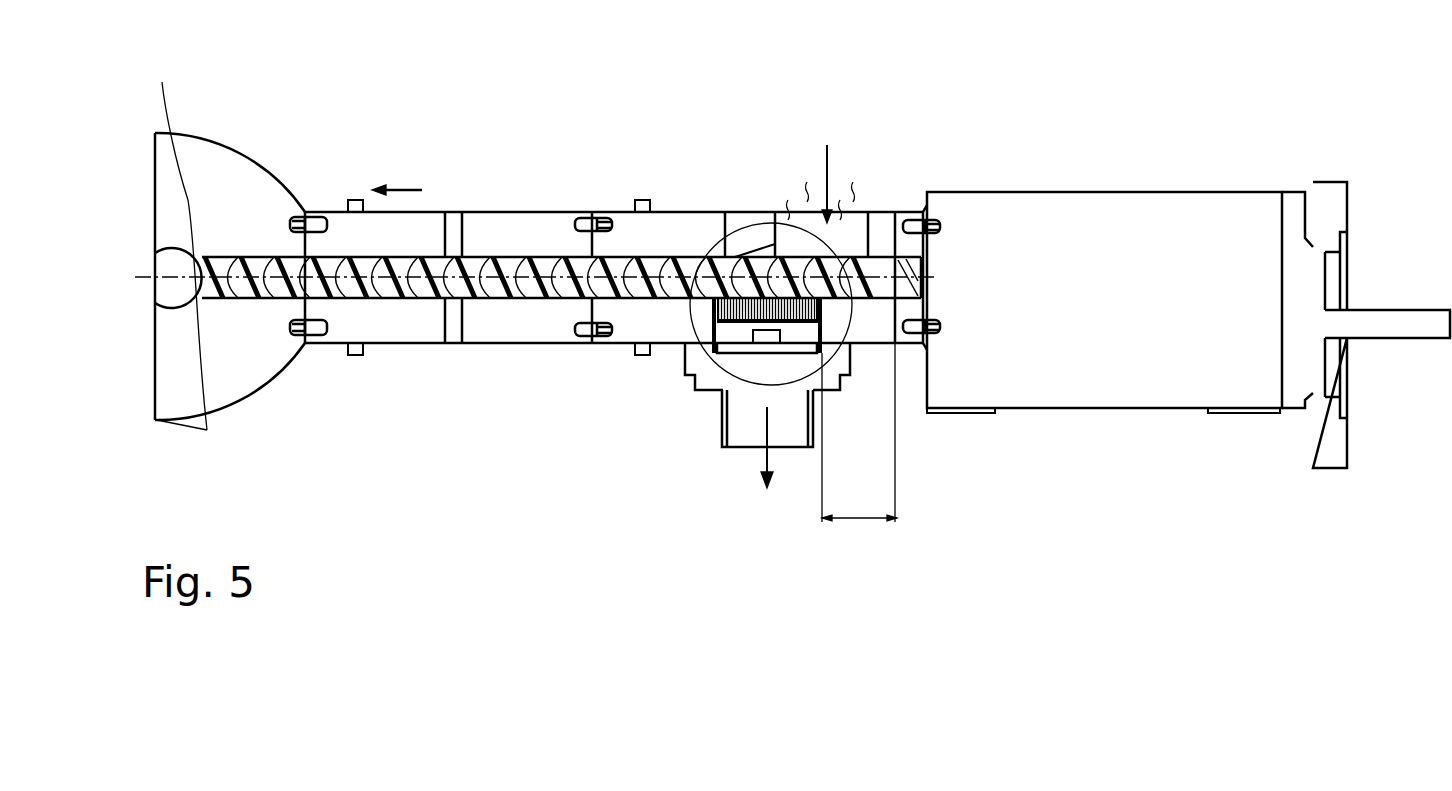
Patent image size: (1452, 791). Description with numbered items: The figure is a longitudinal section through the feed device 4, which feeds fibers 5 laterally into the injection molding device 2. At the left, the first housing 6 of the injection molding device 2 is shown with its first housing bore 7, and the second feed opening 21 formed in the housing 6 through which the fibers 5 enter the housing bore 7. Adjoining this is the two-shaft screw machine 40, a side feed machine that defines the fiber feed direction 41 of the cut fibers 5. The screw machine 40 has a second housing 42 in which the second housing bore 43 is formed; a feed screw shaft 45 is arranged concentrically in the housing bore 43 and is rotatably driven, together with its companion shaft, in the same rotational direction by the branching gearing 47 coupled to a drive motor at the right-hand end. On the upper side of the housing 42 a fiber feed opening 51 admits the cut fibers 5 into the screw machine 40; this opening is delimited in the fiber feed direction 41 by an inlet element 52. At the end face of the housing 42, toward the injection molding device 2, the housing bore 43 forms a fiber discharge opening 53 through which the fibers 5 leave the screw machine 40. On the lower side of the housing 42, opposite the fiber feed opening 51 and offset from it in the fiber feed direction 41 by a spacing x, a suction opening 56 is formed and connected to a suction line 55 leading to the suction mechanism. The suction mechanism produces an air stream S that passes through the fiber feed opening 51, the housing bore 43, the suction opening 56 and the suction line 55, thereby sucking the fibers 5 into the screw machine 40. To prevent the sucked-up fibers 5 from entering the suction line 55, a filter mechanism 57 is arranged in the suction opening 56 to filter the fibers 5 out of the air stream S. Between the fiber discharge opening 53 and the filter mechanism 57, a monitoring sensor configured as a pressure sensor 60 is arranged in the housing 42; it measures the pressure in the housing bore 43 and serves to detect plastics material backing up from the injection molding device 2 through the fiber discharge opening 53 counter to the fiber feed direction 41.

The injection molding device 2 is at (199, 128).
The feed device 4 is at (910, 88).
The fibers 5 is at (853, 182).
The first housing 6 is at (230, 152).
The first housing bore 7 is at (207, 430).
The second feed opening 21 is at (174, 240).
The two-shaft screw machine 40 is at (660, 206).
The fiber feed direction 41 is at (402, 183).
The second housing 42 is at (345, 218).
The second housing bore 43 is at (402, 297).
The feed screw shaft 45 is at (380, 288).
The branching gearing 47 is at (1105, 192).
The fiber feed opening 51 is at (778, 207).
The inlet element 52 is at (731, 206).
The fiber discharge opening 53 is at (294, 300).
The suction line 55 is at (748, 435).
The suction opening 56 is at (724, 334).
The filter mechanism 57 is at (702, 304).
The pressure sensor 60 is at (455, 218).
The air stream S is at (827, 177).
The spacing x is at (859, 432).